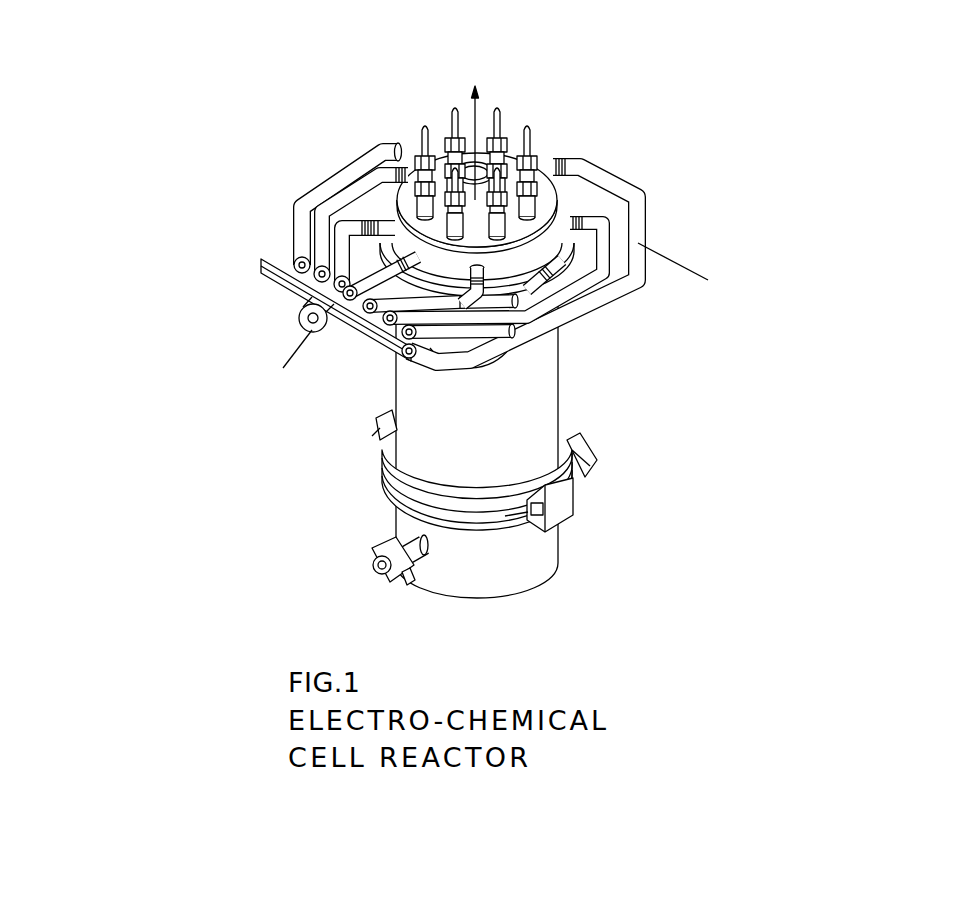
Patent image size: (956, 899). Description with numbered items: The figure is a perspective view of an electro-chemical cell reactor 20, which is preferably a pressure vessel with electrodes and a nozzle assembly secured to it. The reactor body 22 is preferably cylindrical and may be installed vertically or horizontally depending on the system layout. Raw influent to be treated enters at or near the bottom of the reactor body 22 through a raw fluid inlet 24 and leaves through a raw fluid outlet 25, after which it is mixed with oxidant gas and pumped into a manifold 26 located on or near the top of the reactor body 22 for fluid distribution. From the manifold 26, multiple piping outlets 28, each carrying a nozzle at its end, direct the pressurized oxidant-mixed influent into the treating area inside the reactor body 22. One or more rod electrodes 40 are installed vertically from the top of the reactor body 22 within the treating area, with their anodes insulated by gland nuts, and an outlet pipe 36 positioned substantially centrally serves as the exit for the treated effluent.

The electro-chemical cell reactor 20 is at (466, 305).
The reactor body 22 is at (548, 402).
The raw fluid inlet 24 is at (590, 455).
The raw fluid outlet 25 is at (287, 571).
The manifold 26 is at (260, 277).
The piping outlets 28 is at (353, 230).
The outlet pipe 36 is at (444, 101).
The rod electrodes 40 is at (527, 122).